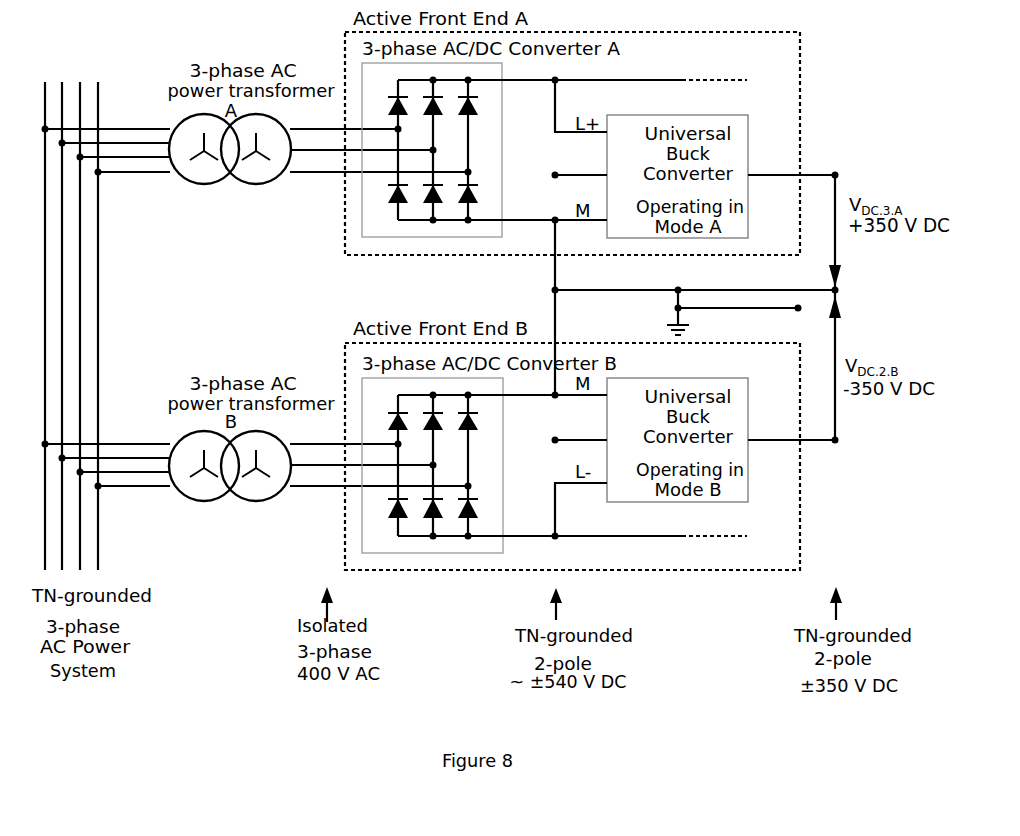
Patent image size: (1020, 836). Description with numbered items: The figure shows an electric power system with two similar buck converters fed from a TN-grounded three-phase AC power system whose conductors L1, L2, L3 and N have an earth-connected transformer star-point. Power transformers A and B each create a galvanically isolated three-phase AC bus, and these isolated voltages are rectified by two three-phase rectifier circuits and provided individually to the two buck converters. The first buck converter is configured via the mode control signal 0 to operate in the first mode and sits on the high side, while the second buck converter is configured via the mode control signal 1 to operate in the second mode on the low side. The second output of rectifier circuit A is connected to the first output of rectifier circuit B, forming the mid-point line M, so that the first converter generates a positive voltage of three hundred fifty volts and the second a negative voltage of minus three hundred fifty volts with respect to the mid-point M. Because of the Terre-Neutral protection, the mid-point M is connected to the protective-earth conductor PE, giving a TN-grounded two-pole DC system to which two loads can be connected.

The conductor L1 is at (105, 314).
The conductor L2 is at (115, 314).
The conductor L3 is at (124, 314).
The conductor N is at (133, 314).
The mode control signal 0 is at (573, 174).
The mode control signal 1 is at (573, 440).
The mid-point line M is at (709, 291).
The protective-earth (PE) conductor PE is at (746, 312).